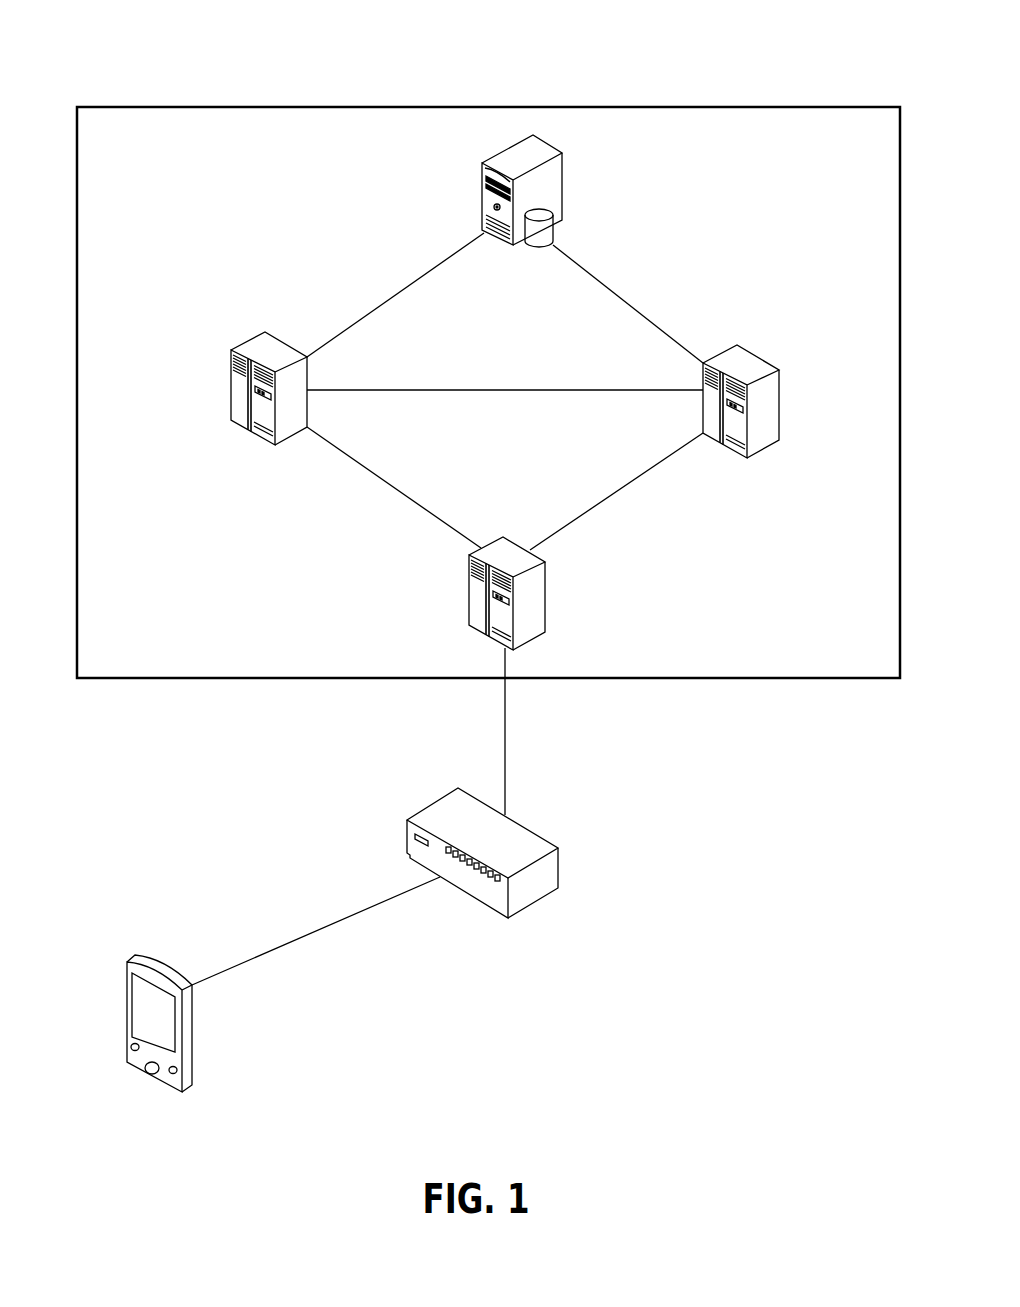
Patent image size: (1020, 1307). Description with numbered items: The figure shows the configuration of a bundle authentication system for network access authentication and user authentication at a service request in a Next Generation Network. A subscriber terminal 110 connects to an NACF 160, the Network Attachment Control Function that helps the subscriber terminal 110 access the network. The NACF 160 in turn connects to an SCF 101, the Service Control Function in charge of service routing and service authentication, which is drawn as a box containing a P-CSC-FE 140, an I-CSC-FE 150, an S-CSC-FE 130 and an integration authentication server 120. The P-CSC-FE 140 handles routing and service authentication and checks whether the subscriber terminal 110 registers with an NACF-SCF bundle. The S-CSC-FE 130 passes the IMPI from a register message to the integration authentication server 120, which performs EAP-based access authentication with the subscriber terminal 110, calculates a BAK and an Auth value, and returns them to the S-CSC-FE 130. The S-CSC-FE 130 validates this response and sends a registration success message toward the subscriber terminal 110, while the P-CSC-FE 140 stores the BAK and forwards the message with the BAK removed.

The SCF 101 is at (738, 107).
The subscriber terminal 110 is at (127, 998).
The integration authentication server 120 is at (482, 200).
The S-CSC-FE 130 is at (704, 364).
The P-CSC-FE 140 is at (469, 595).
The I-CSC-FE 150 is at (231, 382).
The NACF 160 is at (408, 832).